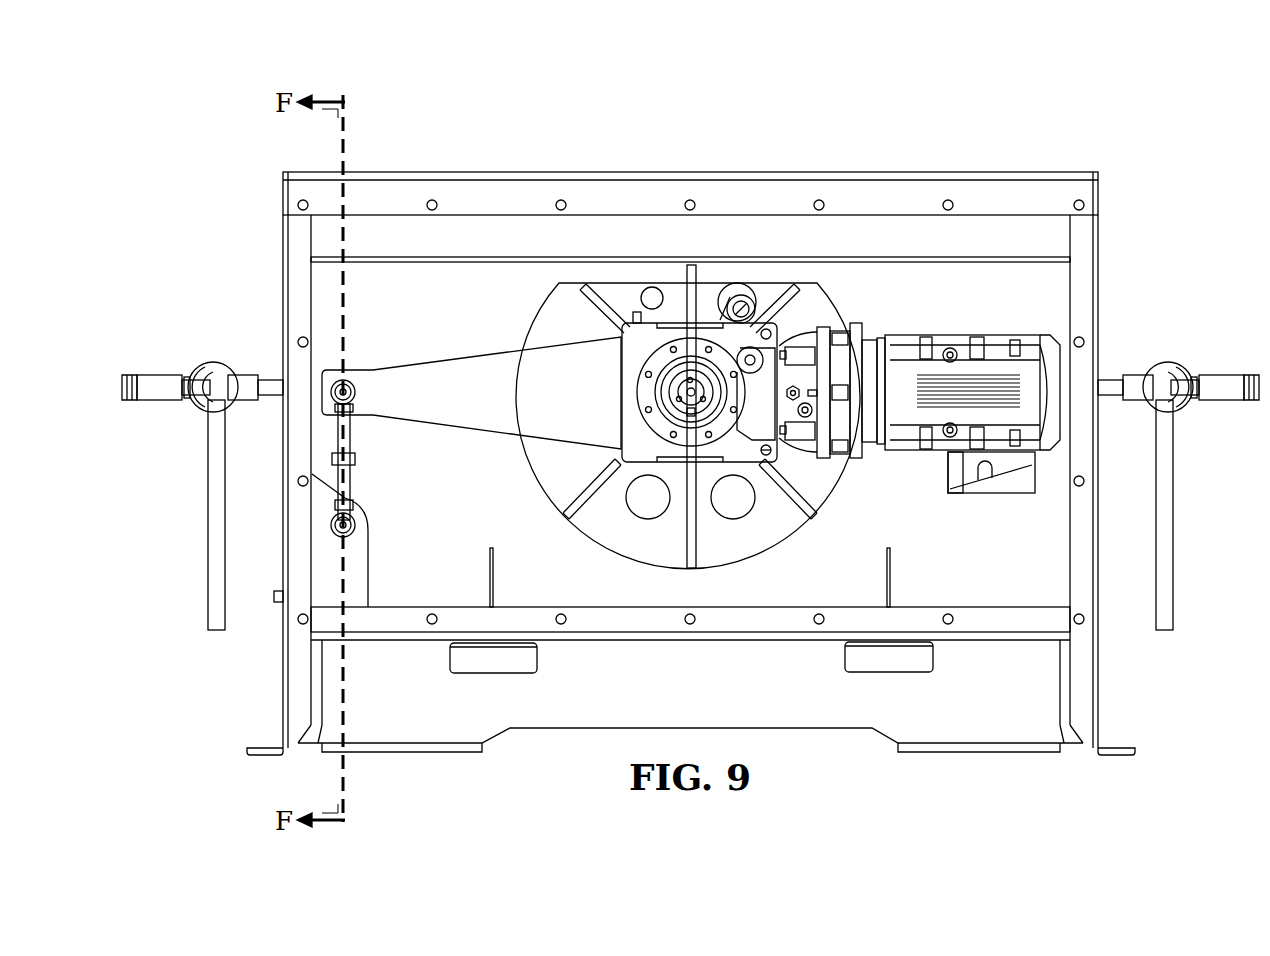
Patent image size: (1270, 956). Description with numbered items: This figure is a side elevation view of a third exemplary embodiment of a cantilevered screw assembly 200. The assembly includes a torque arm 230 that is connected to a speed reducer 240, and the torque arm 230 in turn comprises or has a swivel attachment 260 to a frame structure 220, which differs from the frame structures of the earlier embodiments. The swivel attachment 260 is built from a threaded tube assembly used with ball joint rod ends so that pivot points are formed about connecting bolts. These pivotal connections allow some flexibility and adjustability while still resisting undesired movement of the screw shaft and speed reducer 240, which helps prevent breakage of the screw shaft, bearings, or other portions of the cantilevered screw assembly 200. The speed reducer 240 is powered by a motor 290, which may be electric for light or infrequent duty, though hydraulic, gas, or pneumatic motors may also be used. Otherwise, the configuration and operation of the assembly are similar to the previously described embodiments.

The cantilevered screw assembly 200 is at (958, 128).
The frame structure 220 is at (362, 558).
The torque arm 230 is at (440, 372).
The speed reducer 240 is at (621, 392).
The swivel attachment 260 is at (352, 436).
The motor 290 is at (998, 336).